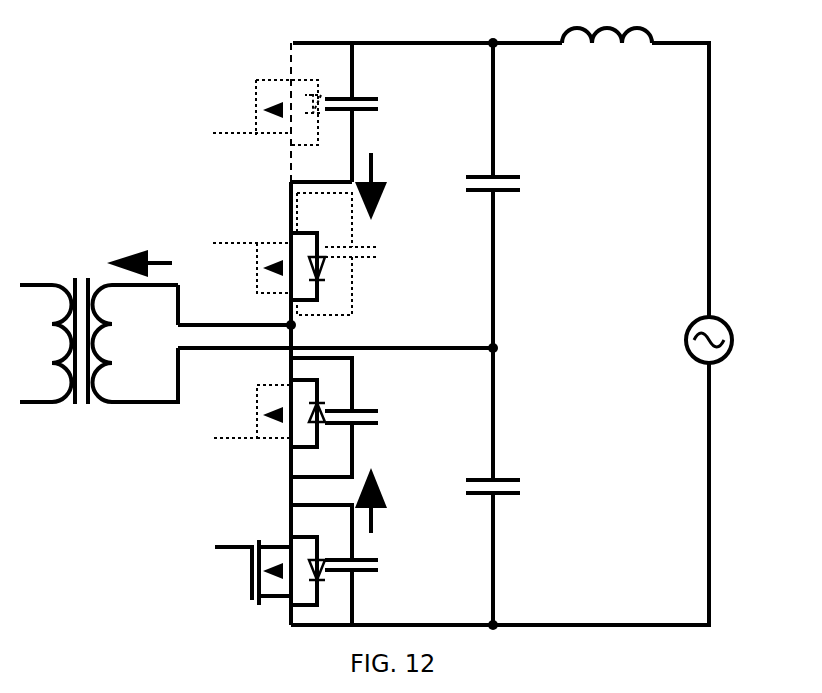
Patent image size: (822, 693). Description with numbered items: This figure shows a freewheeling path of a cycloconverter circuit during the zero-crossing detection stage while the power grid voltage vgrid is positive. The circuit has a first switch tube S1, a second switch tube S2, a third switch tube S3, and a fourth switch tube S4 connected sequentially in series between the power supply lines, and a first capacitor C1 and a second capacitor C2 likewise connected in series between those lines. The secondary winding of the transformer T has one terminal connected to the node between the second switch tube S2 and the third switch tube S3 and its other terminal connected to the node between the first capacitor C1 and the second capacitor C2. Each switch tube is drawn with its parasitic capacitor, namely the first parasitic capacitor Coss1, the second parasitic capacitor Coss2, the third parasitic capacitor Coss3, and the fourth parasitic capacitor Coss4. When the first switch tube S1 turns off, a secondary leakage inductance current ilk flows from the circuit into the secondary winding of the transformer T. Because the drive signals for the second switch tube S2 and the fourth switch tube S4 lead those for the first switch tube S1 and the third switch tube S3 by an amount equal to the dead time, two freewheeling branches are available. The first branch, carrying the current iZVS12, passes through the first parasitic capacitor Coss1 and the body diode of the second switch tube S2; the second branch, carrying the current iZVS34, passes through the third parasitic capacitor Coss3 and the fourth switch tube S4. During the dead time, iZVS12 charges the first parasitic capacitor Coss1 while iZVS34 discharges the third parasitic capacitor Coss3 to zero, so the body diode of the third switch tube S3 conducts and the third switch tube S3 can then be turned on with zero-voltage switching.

The transformer T is at (99, 313).
The secondary leakage inductance current ilk is at (139, 251).
The first switch tube S1 is at (262, 112).
The second switch tube S2 is at (264, 266).
The third switch tube S3 is at (277, 417).
The fourth switch tube S4 is at (277, 565).
The first parasitic capacitor Coss1 is at (383, 111).
The second parasitic capacitor Coss2 is at (369, 254).
The third parasitic capacitor Coss3 is at (383, 430).
The fourth parasitic capacitor Coss4 is at (383, 580).
The first branch current iZVS12 is at (405, 190).
The second branch current iZVS34 is at (405, 500).
The first capacitor C1 is at (512, 195).
The second capacitor C2 is at (512, 486).
The power grid voltage vgrid is at (735, 338).